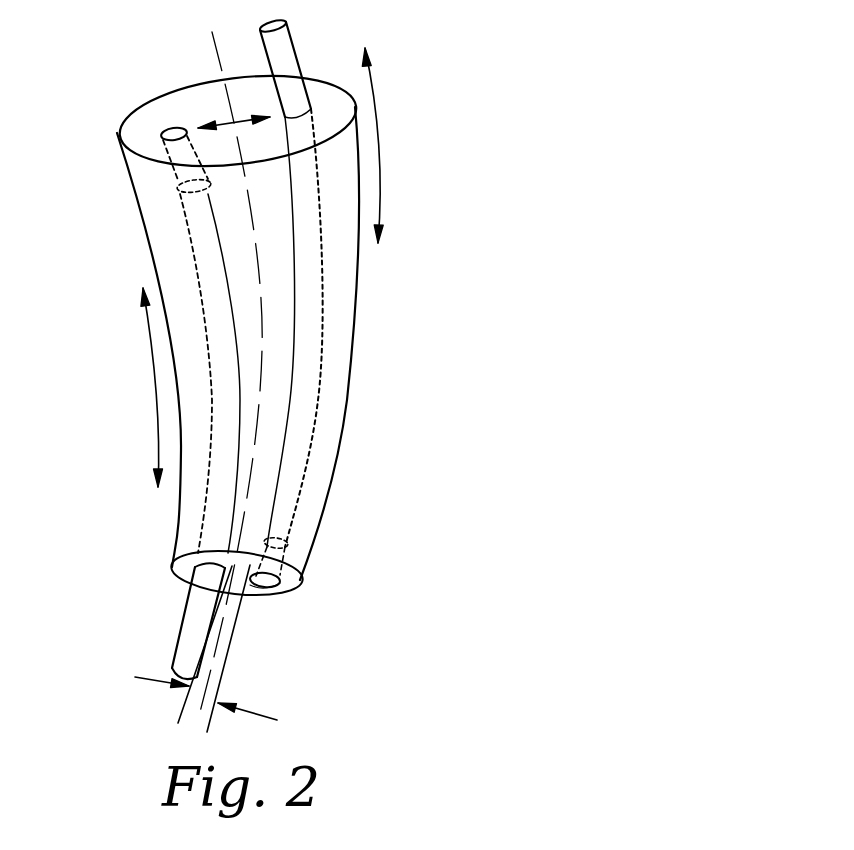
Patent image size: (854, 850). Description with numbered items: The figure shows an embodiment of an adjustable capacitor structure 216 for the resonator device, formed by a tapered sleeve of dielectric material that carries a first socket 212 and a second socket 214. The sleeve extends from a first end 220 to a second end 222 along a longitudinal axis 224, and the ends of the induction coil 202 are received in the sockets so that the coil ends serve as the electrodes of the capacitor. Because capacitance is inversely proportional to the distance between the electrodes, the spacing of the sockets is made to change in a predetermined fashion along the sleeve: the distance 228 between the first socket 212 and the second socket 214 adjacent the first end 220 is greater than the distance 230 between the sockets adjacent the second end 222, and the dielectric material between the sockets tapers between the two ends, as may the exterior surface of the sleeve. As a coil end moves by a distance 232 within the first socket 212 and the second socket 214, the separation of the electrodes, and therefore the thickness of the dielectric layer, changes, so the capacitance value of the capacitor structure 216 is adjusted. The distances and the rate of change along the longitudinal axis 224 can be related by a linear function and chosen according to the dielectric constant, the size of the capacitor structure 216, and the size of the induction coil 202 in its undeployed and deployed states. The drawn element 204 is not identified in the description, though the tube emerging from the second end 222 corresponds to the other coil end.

The induction coil 202 is at (290, 38).
The second tube 204 is at (185, 619).
The first socket 212 is at (257, 605).
The second socket 214 is at (176, 114).
The capacitor structure 216 is at (402, 298).
The first end 220 is at (122, 133).
The second end 222 is at (294, 591).
The longitudinal axis 224 is at (218, 657).
The distance 228 is at (225, 115).
The distance 230 is at (136, 678).
The distance 232 is at (158, 384).